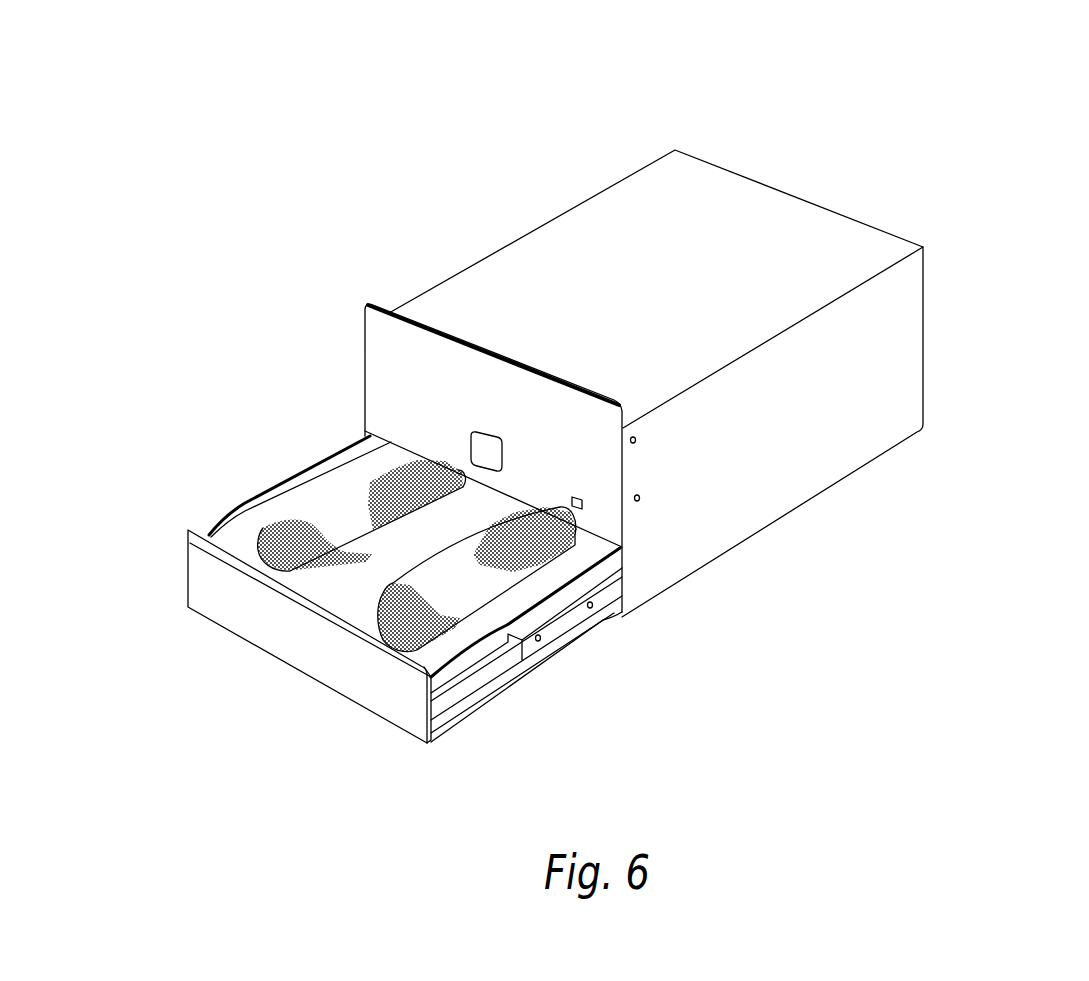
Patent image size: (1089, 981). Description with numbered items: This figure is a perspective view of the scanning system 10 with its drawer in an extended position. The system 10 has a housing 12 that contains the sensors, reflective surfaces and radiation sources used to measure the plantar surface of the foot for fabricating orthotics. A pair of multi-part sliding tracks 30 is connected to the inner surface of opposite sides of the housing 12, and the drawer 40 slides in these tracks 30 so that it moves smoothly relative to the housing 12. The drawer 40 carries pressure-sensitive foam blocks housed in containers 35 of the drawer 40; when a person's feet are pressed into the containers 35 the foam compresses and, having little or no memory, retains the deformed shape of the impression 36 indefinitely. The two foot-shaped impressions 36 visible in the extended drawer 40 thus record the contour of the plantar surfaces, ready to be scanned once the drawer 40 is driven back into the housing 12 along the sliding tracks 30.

The scanning system 10 is at (952, 108).
The housing 12 is at (768, 518).
The sliding tracks 30 is at (562, 618).
The containers 35 is at (232, 530).
The impression 36 is at (443, 597).
The drawer 40 is at (286, 663).